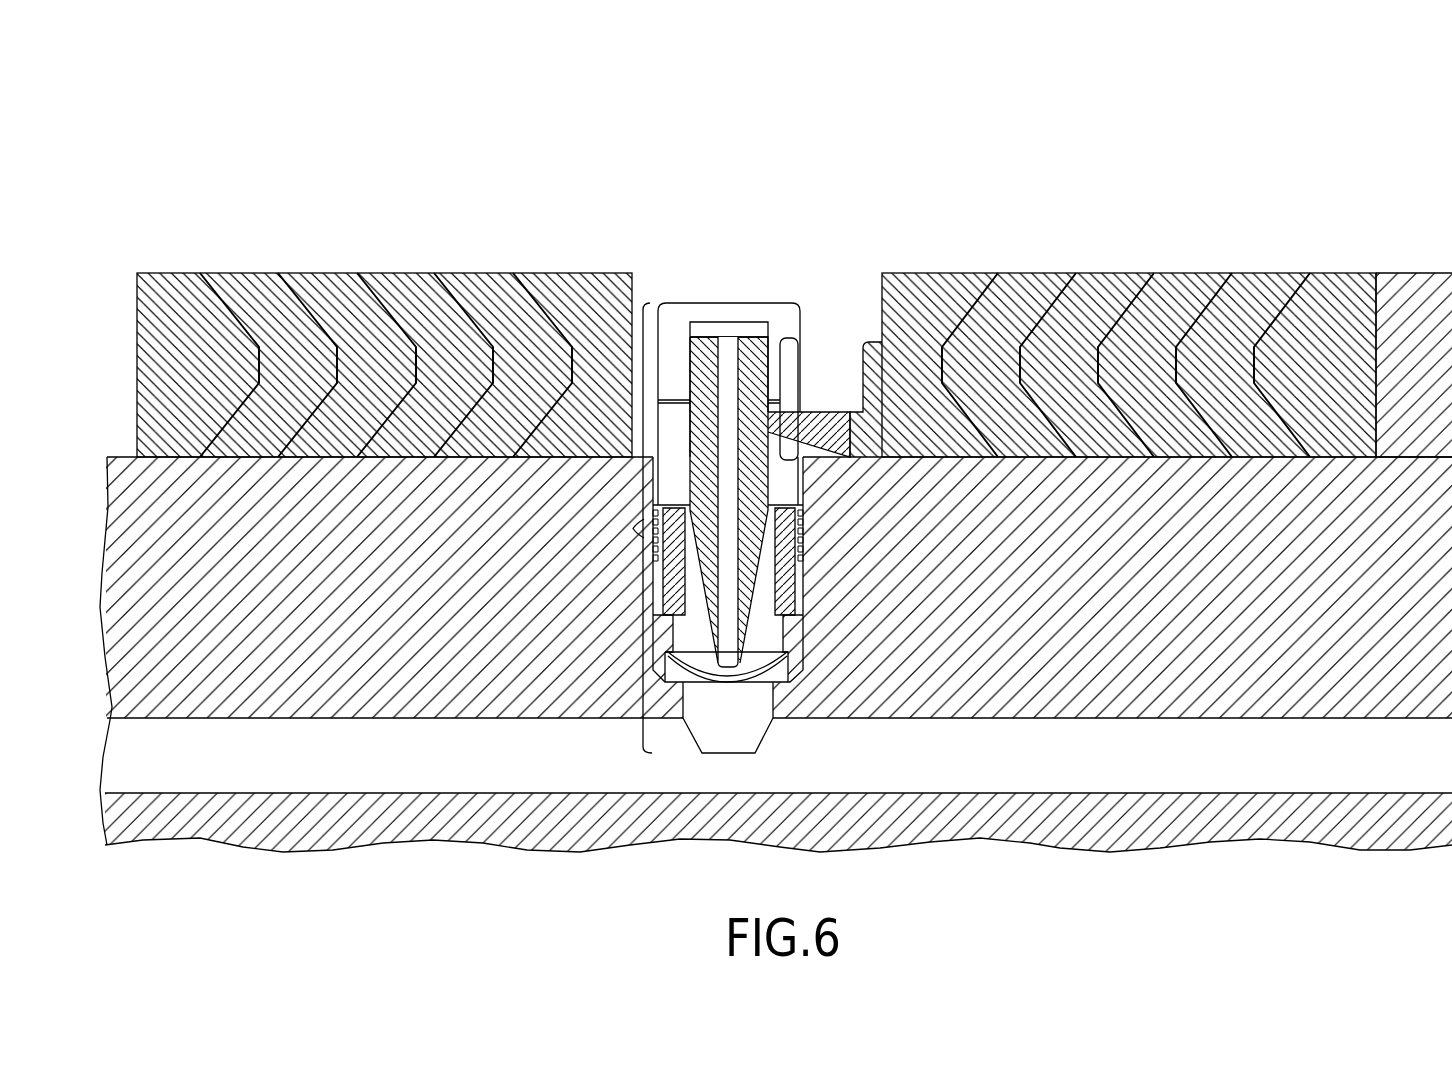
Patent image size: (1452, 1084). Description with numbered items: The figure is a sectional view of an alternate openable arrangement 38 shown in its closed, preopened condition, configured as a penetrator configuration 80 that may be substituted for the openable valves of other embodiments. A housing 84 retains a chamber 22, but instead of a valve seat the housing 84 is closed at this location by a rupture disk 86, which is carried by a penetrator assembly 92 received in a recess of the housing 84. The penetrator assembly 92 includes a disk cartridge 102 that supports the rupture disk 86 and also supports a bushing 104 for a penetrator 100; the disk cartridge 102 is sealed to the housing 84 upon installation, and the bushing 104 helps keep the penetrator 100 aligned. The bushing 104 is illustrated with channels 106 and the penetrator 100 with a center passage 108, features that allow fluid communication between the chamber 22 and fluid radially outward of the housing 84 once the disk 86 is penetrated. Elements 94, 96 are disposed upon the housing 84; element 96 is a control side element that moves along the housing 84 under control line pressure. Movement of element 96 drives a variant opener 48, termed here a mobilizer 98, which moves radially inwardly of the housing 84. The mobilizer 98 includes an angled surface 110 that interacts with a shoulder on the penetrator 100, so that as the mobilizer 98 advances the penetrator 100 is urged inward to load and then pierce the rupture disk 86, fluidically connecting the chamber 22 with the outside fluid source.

The chamber 22 is at (1052, 773).
The openable arrangement 38 is at (695, 196).
The opener 48 is at (847, 378).
The penetrator configuration 80 is at (776, 574).
The housing 84 is at (1425, 292).
The rupture disk 86 is at (680, 658).
The penetrator assembly 92 is at (762, 296).
The element 94 is at (401, 273).
The element 96 is at (1115, 273).
The mobilizer 98 is at (863, 433).
The penetrator 100 is at (703, 357).
The disk cartridge 102 is at (798, 627).
The bushing 104 is at (780, 578).
The channels 106 is at (686, 595).
The center passage 108 is at (721, 370).
The angled surface 110 is at (815, 455).